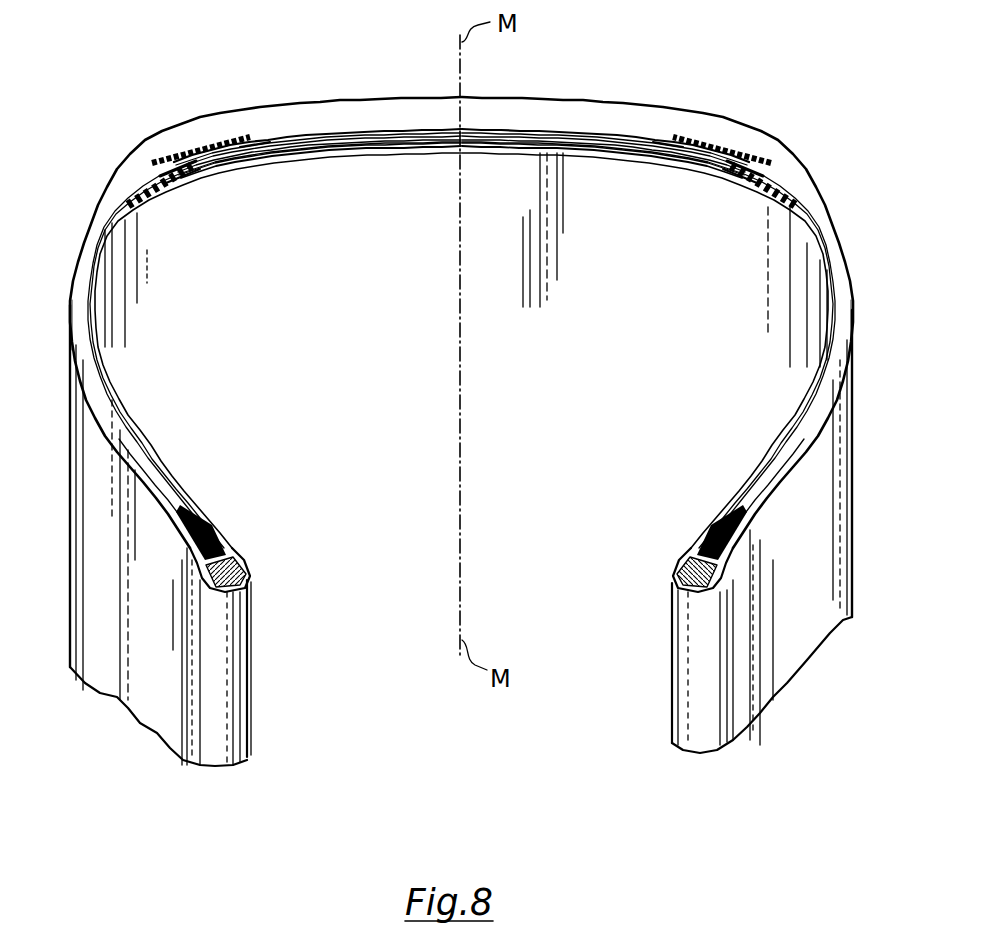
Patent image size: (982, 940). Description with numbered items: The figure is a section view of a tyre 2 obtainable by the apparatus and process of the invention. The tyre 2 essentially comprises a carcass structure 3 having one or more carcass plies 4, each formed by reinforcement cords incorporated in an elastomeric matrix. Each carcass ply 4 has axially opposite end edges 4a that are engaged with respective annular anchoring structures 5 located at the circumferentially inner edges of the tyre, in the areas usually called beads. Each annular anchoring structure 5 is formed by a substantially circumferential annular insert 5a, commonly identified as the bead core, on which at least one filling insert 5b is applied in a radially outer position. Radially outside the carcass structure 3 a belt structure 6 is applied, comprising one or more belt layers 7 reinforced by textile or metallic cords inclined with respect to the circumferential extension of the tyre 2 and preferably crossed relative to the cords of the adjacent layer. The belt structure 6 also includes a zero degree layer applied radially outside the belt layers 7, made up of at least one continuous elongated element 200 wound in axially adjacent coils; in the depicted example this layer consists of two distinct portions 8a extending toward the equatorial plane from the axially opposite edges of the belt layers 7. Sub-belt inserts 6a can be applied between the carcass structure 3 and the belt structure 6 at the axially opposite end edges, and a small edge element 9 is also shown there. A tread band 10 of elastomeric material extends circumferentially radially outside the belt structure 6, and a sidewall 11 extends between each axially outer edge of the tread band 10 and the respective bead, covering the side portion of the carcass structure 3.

The tyre 2 is at (793, 89).
The carcass structure 3 is at (161, 466).
The carcass ply 4 is at (123, 423).
The end edge 4a is at (177, 523).
The annular anchoring structure 5 is at (218, 539).
The annular insert 5a is at (248, 573).
The filling insert 5b is at (209, 527).
The belt structure 6 is at (386, 126).
The sub-belt insert 6a is at (138, 190).
The belt layer 7 is at (548, 135).
The portion of zero degree layer 8a is at (186, 150).
The belt edge cover 9 is at (165, 160).
The tread band 10 is at (330, 100).
The sidewall 11 is at (78, 296).
The continuous elongated element 200 is at (255, 150).